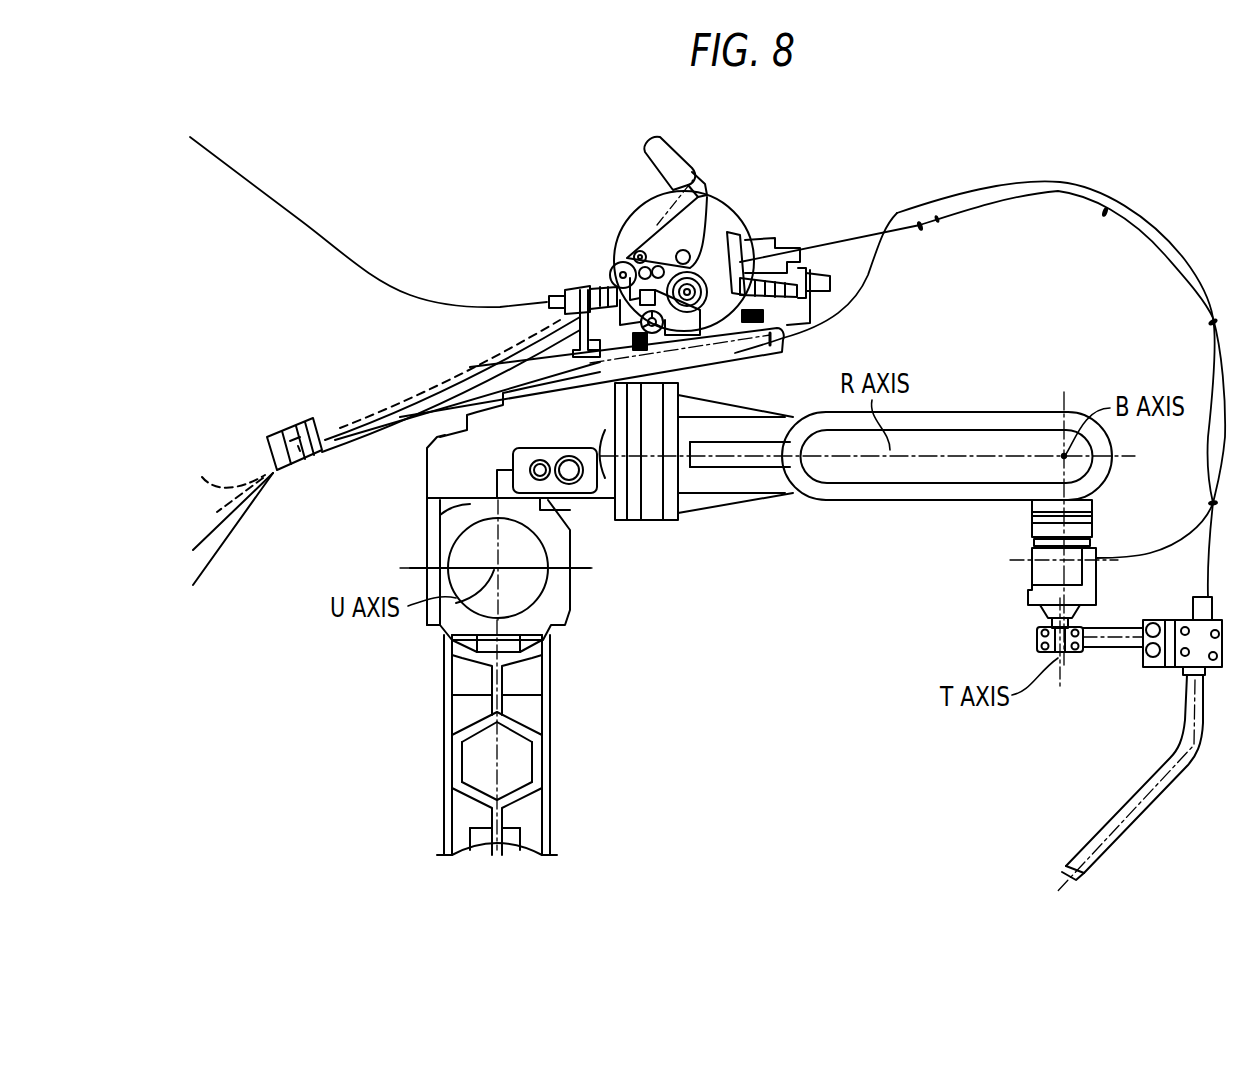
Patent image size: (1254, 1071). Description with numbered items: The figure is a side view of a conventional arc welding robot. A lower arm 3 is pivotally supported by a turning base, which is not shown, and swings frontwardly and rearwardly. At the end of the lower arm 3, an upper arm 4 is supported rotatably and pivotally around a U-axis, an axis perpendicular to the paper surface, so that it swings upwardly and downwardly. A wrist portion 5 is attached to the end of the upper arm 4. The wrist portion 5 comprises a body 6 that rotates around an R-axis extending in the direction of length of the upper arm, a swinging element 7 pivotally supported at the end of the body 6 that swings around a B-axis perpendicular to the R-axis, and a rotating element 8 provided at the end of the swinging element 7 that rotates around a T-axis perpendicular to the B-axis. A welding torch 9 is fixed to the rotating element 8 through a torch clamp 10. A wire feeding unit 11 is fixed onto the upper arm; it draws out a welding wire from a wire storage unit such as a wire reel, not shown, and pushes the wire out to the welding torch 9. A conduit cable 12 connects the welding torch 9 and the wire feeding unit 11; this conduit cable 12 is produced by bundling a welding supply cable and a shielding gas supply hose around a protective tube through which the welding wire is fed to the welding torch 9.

The lower arm 3 is at (455, 771).
The upper arm 4 is at (428, 497).
The wrist portion 5 is at (812, 508).
The body 6 is at (950, 410).
The swinging element 7 is at (1032, 504).
The rotating element 8 is at (1030, 552).
The welding torch 9 is at (1105, 832).
The torch clamp 10 is at (1113, 645).
The wire feeding unit 11 is at (627, 250).
The conduit cable 12 is at (898, 212).